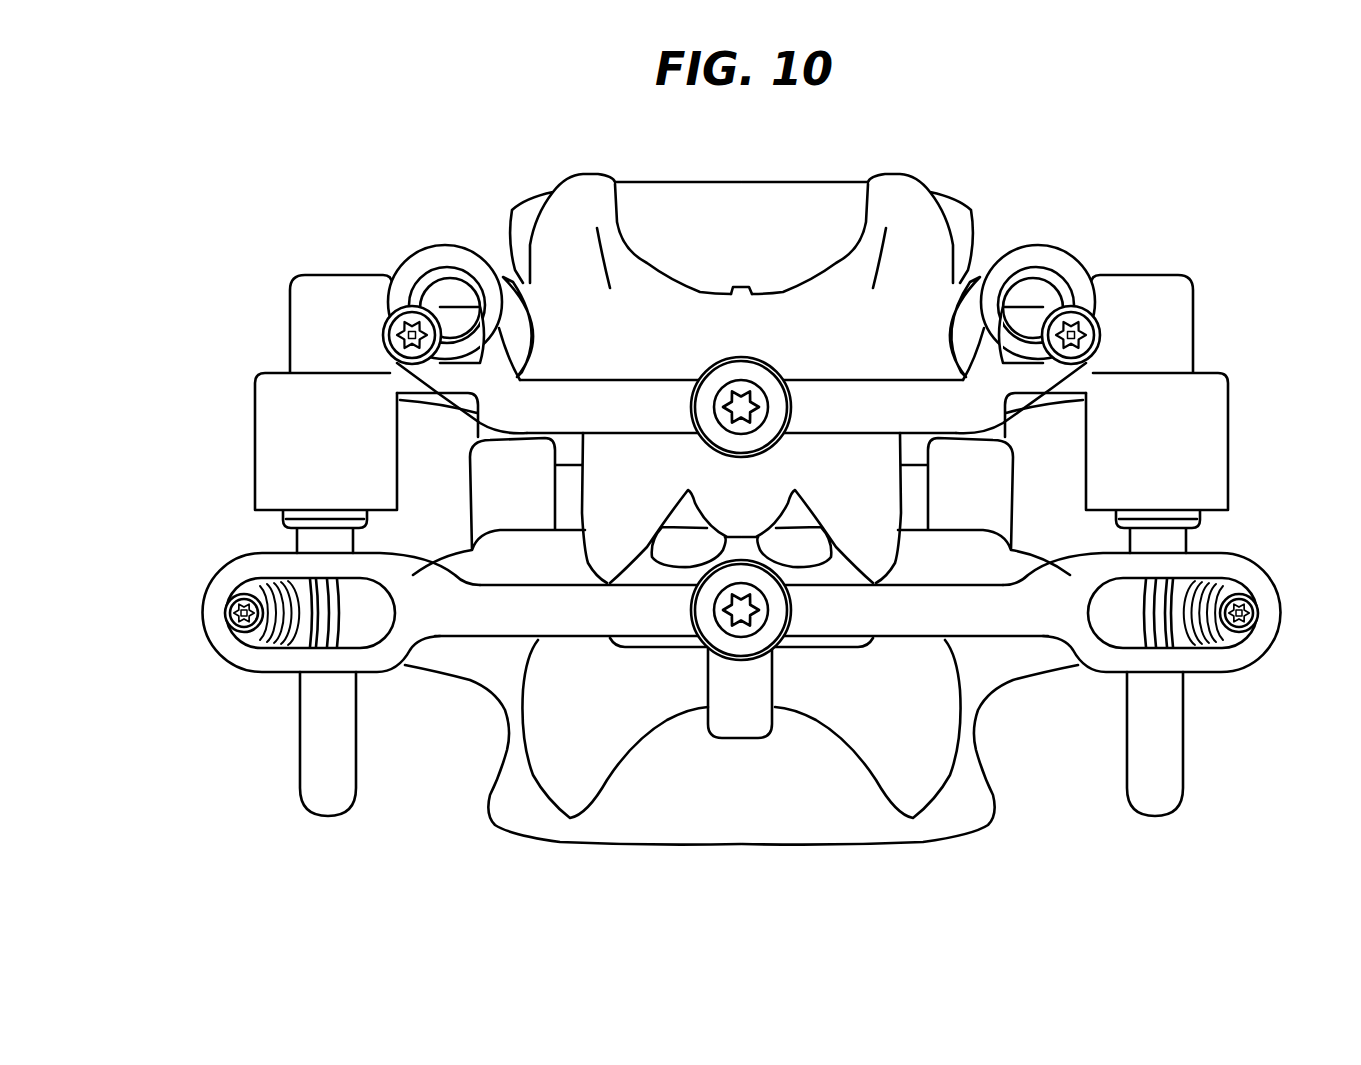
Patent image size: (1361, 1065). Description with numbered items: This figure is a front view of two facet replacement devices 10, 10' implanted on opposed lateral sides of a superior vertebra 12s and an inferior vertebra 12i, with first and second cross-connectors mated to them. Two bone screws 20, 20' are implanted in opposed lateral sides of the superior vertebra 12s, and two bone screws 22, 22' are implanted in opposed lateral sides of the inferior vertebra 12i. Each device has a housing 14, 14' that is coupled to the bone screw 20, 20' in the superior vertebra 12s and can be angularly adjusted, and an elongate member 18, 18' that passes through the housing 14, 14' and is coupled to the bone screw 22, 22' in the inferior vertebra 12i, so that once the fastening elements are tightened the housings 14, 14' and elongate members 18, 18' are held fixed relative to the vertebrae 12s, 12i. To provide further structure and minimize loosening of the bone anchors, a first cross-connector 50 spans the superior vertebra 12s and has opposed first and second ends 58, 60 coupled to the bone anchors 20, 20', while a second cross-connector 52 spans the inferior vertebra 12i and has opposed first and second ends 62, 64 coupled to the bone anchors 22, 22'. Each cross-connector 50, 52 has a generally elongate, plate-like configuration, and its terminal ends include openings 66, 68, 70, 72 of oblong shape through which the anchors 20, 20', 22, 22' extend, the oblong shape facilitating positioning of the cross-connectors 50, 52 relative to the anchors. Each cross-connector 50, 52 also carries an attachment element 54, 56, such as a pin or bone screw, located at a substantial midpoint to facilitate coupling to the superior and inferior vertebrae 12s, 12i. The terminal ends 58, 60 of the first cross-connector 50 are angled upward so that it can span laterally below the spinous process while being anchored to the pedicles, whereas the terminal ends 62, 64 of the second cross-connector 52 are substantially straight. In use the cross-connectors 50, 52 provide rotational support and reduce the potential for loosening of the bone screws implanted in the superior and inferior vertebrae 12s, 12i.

The facet replacement device 10' is at (279, 284).
The facet replacement device 10 is at (1200, 286).
The superior vertebra 12s is at (764, 250).
The inferior vertebra 12i is at (762, 805).
The housing 14' is at (326, 414).
The housing 14 is at (1157, 414).
The elongate member 18' is at (328, 744).
The elongate member 18 is at (1155, 744).
The bone screw 20' is at (415, 295).
The bone screw 20 is at (1067, 292).
The bone screw 22' is at (229, 575).
The bone screw 22 is at (1255, 575).
The first cross-connector 50 is at (648, 422).
The second cross-connector 52 is at (648, 625).
The attachment element 54 is at (774, 362).
The attachment element 56 is at (769, 638).
The first end 58 is at (447, 245).
The second end 60 is at (1037, 242).
The first end 62 is at (233, 670).
The second end 64 is at (1253, 670).
The opening 66 is at (433, 270).
The opening 68 is at (1050, 270).
The opening 70 is at (300, 637).
The opening 72 is at (1183, 637).